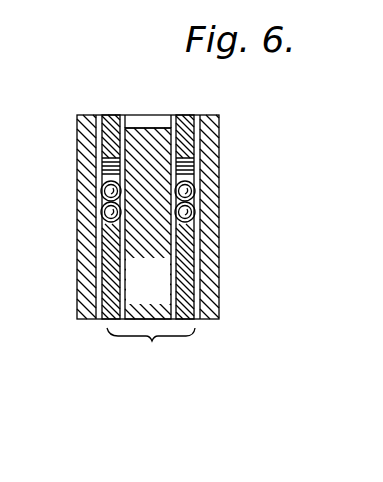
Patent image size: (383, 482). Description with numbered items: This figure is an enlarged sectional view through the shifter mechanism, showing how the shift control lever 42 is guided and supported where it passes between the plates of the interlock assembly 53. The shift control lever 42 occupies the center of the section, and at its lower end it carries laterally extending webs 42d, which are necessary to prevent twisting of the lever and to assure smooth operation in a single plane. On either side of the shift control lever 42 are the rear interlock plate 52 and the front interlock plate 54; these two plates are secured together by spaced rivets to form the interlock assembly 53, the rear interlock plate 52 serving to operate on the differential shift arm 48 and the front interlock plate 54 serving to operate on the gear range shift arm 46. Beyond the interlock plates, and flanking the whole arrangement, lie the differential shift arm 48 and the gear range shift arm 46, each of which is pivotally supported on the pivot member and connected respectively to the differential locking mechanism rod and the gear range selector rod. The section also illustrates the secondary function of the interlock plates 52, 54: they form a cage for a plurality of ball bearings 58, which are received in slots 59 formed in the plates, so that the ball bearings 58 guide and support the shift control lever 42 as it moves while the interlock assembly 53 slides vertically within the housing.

The shift control lever 42 is at (164, 298).
The laterally extending webs 42d is at (147, 124).
The gear range shift arm 46 is at (213, 134).
The differential shift arm 48 is at (98, 135).
The rear interlock plate 52 is at (111, 288).
The front interlock plate 54 is at (188, 282).
The interlock assembly 53 is at (152, 341).
The ball bearings 58 is at (103, 214).
The slots 59 is at (110, 171).